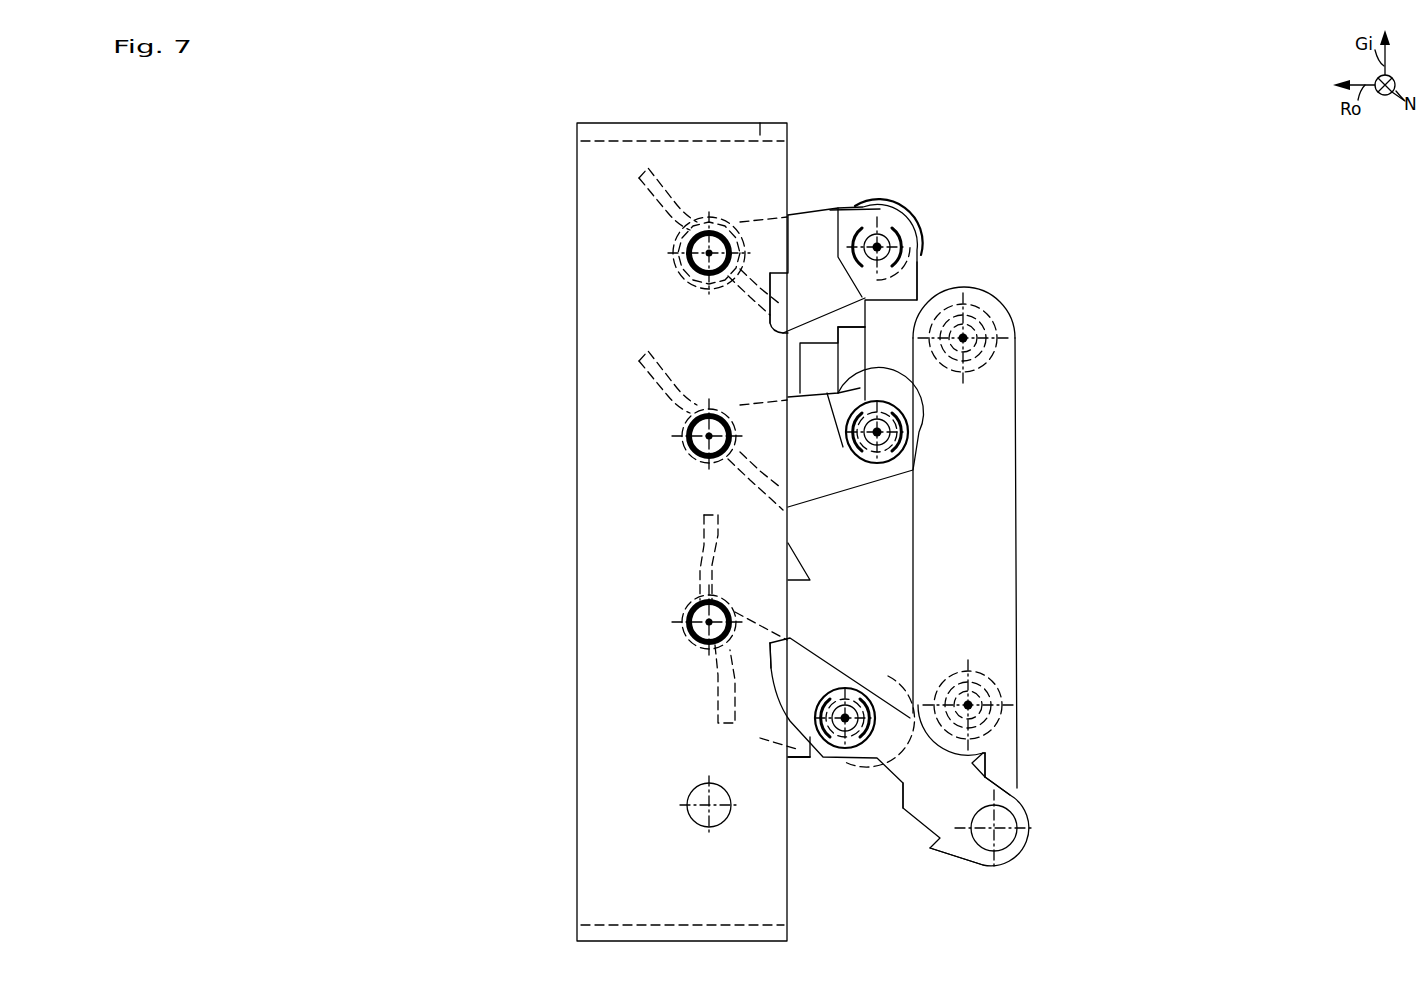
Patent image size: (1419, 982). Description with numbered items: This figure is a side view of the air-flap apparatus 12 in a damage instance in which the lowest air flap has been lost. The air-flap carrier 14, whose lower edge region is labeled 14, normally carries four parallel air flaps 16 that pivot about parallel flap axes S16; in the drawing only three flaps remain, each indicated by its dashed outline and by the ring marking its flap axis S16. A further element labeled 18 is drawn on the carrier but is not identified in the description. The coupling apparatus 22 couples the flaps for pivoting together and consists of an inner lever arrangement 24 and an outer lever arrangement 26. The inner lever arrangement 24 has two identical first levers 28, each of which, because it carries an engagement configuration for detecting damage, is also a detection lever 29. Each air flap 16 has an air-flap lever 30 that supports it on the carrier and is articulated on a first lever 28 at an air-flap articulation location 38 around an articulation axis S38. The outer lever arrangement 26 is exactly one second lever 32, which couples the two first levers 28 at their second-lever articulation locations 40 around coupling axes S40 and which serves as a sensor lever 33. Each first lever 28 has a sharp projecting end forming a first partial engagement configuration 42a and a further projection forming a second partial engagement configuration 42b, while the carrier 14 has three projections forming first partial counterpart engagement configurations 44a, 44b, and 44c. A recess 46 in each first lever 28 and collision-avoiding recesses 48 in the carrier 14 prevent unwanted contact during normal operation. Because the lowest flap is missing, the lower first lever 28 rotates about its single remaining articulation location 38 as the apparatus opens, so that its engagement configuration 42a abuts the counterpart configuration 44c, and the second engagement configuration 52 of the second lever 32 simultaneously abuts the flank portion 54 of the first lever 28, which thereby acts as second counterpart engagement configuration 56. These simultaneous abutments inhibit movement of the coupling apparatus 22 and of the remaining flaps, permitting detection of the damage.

The air-flap apparatus 12 is at (617, 539).
The air-flap carrier 14 is at (768, 932).
The air flap 16 is at (714, 451).
The base plate 18 is at (663, 539).
The coupling apparatus 22 is at (985, 158).
The inner lever arrangement 24 is at (885, 142).
The outer lever arrangement 26 is at (997, 274).
The first lever 28 is at (925, 529).
The detection lever 29 is at (925, 529).
The air-flap lever 30 is at (1035, 515).
The second lever 32 is at (965, 537).
The sensor lever 33 is at (965, 537).
The air-flap articulation location 38 is at (897, 500).
The second-lever articulation location 40 is at (998, 517).
The first partial engagement configuration 42a is at (835, 205).
The second partial engagement configuration 42b is at (835, 395).
The first partial counterpart engagement configuration 44a is at (800, 395).
The first partial counterpart engagement configuration 44b is at (800, 565).
The first partial counterpart engagement configuration 44c is at (797, 733).
The recess 46 is at (870, 559).
The collision-avoiding recess 48 is at (783, 290).
The second engagement configuration 52 is at (1003, 768).
The flank portion 54 is at (1052, 784).
The second counterpart engagement configuration 56 is at (1000, 780).
The flap axis S16 is at (705, 262).
The articulation axis S38 is at (900, 247).
The coupling axis S40 is at (980, 338).